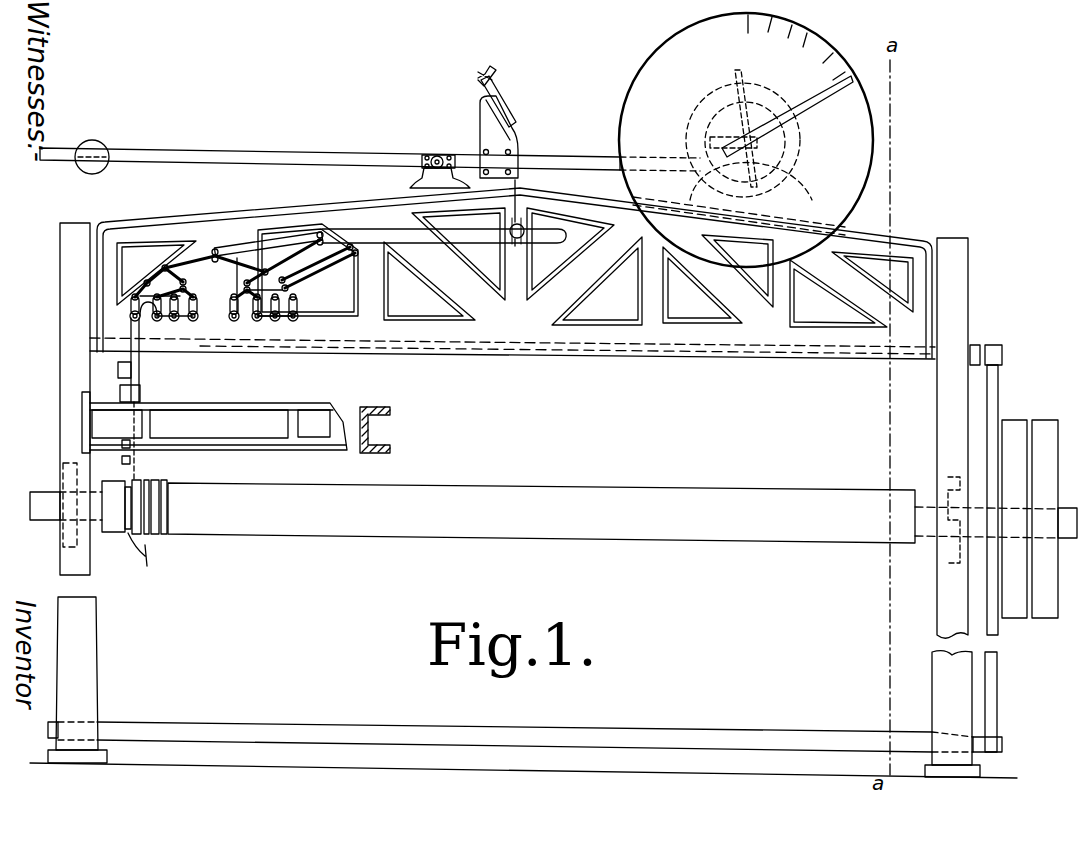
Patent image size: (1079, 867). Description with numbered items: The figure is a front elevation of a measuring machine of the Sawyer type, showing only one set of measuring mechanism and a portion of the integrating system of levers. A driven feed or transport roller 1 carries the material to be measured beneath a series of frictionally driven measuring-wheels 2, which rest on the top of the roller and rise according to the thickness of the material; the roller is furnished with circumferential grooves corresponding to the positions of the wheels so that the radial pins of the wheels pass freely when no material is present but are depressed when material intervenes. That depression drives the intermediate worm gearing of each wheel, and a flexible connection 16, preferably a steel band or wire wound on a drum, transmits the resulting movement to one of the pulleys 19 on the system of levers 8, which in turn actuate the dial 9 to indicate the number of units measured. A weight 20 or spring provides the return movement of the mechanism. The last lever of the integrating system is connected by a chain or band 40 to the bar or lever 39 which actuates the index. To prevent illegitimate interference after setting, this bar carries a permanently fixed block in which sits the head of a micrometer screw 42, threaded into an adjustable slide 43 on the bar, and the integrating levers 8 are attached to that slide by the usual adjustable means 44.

The feed or transport roller 1 is at (487, 482).
The measuring-wheels 2 is at (122, 465).
The system of levers 8 is at (230, 262).
The dial 9 is at (746, 140).
The flexible connection 16 is at (131, 325).
The pulley 19 is at (139, 312).
The weight 20 is at (97, 150).
The bar or lever 39 is at (347, 157).
The chain or band 40 is at (518, 197).
The micrometer screw 42 is at (463, 160).
The adjustable slide 43 is at (495, 138).
The adjustable means 44 is at (508, 106).